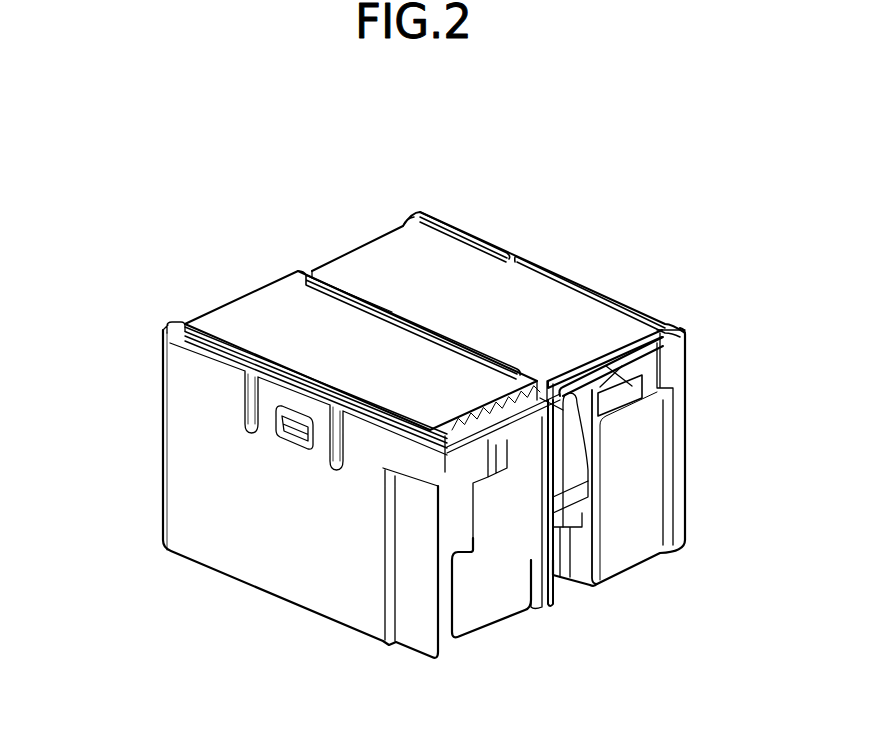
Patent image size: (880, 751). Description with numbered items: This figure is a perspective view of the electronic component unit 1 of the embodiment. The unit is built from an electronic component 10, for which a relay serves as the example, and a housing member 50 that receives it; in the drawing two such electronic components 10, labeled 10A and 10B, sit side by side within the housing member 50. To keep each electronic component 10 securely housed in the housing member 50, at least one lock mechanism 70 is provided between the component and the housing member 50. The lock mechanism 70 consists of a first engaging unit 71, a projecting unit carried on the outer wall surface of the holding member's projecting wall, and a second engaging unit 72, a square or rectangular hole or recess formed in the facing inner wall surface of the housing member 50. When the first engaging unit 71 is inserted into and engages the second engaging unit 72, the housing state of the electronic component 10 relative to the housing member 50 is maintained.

The electronic component unit 1 is at (534, 143).
The electronic component 10 is at (435, 286).
The first battery cell unit 10A is at (252, 318).
The second battery cell unit 10B is at (377, 260).
The housing member 50 is at (686, 440).
The lock mechanism 70 is at (82, 453).
The first engaging unit 71 is at (290, 439).
The second engaging unit 72 is at (291, 442).